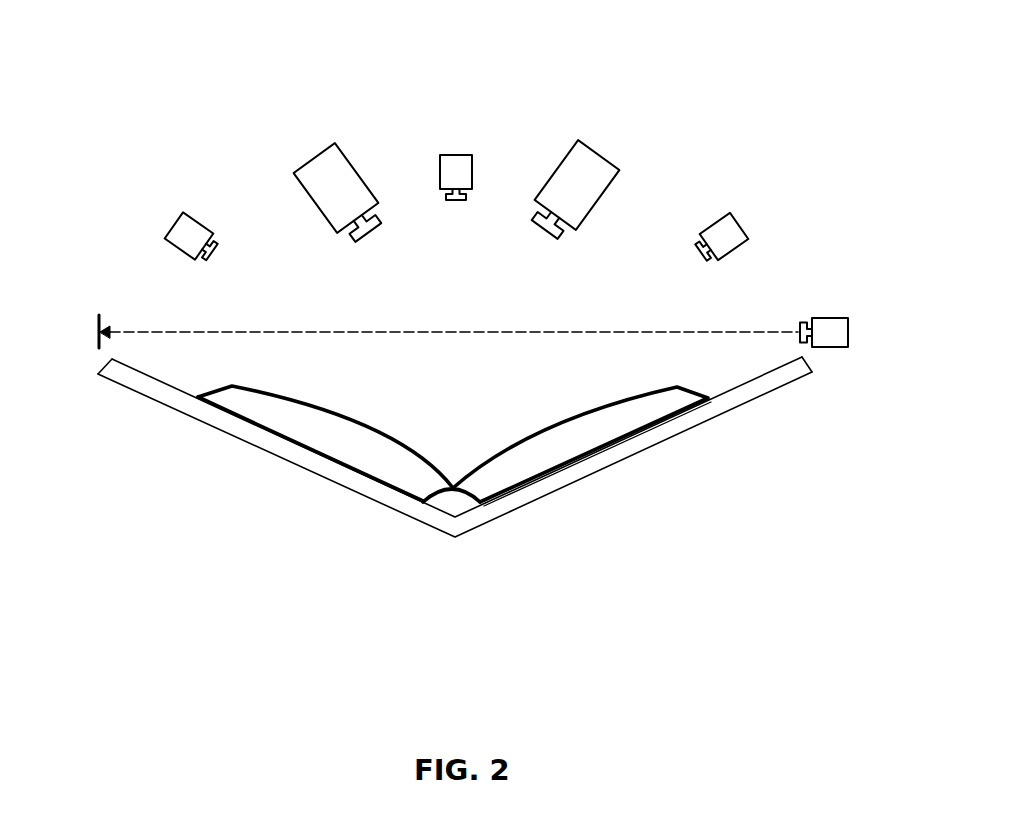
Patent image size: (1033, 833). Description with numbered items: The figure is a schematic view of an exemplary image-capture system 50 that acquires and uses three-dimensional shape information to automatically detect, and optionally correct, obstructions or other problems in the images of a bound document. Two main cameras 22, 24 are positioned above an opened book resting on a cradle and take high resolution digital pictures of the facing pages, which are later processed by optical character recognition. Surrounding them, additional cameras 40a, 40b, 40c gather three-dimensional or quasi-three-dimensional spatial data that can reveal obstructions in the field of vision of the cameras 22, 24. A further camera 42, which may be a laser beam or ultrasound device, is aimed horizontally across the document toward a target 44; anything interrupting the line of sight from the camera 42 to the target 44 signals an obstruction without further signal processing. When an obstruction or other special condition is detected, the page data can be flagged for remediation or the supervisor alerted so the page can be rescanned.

The imaging system 50 is at (740, 94).
The camera 22 is at (303, 164).
The camera 24 is at (613, 160).
The additional camera 40a is at (170, 228).
The additional camera 40b is at (457, 155).
The additional camera 40c is at (743, 227).
The camera 42 is at (825, 313).
The target 44 is at (95, 333).